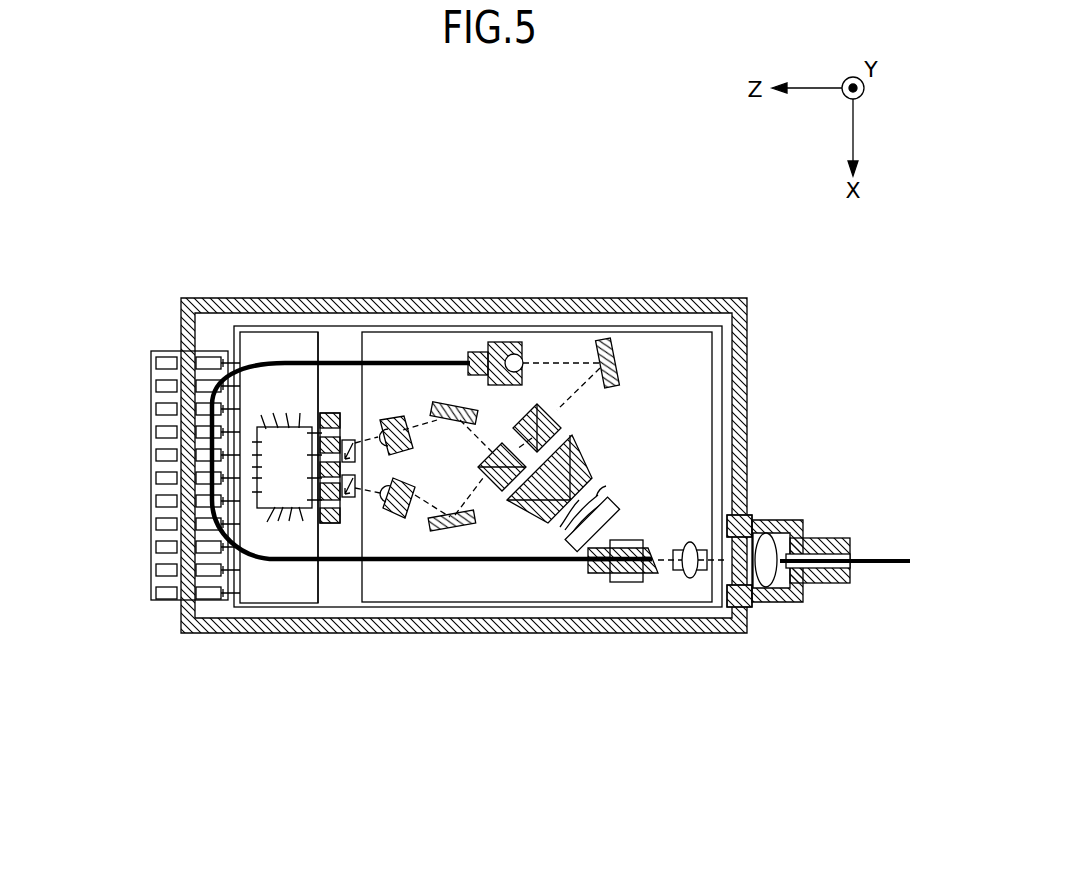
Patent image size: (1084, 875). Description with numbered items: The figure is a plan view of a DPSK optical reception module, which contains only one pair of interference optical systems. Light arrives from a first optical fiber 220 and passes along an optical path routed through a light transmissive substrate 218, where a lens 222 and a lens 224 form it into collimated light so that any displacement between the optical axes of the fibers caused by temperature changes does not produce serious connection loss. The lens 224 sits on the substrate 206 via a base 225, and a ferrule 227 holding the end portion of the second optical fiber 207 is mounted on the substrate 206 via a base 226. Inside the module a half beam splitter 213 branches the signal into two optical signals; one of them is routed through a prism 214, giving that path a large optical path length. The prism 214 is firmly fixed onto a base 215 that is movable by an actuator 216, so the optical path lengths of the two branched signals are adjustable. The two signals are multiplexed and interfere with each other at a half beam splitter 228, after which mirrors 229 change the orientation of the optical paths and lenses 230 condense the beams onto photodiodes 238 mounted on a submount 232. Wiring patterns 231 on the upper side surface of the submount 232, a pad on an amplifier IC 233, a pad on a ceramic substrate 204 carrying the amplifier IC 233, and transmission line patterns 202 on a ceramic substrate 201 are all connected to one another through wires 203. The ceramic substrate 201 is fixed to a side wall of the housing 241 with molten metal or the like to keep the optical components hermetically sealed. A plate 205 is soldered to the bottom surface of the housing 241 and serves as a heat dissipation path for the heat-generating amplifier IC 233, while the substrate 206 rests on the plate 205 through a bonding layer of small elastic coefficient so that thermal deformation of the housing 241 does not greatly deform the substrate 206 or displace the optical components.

The ceramic substrate 201 is at (163, 347).
The transmission line patterns 202 is at (147, 378).
The wires 203 is at (240, 360).
The ceramic substrate 204 is at (278, 345).
The plate 205 is at (342, 345).
The substrate 206 is at (393, 345).
The second optical fiber 207 is at (440, 362).
The half beam splitter 213 is at (562, 430).
The prism 214 is at (585, 470).
The base 215 is at (588, 490).
The actuator 216 is at (597, 497).
The light transmissive substrate 218 is at (757, 519).
The first optical fiber 220 is at (890, 556).
The lens 222 is at (765, 583).
The lens 224 is at (688, 580).
The base 225 is at (675, 570).
The base 226 is at (627, 577).
The ferrule 227 is at (598, 563).
The half beam splitter 228 is at (493, 488).
The mirrors 229 is at (447, 527).
The lenses 230 is at (393, 513).
The wiring patterns 231 is at (337, 500).
The submount 232 is at (327, 505).
The amplifier IC 233 is at (265, 505).
The photodiodes 238 is at (348, 500).
The housing 241 is at (187, 612).